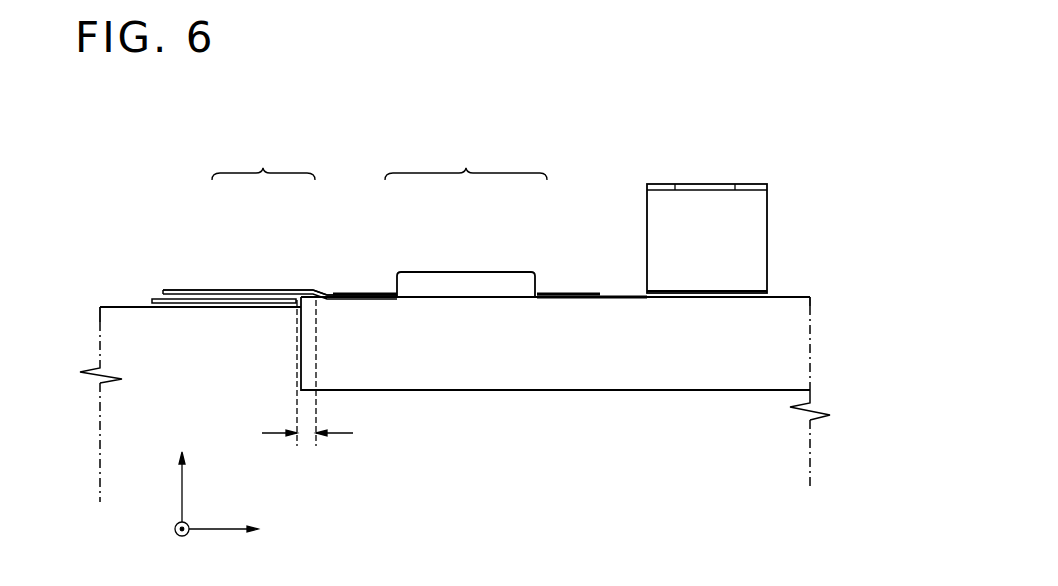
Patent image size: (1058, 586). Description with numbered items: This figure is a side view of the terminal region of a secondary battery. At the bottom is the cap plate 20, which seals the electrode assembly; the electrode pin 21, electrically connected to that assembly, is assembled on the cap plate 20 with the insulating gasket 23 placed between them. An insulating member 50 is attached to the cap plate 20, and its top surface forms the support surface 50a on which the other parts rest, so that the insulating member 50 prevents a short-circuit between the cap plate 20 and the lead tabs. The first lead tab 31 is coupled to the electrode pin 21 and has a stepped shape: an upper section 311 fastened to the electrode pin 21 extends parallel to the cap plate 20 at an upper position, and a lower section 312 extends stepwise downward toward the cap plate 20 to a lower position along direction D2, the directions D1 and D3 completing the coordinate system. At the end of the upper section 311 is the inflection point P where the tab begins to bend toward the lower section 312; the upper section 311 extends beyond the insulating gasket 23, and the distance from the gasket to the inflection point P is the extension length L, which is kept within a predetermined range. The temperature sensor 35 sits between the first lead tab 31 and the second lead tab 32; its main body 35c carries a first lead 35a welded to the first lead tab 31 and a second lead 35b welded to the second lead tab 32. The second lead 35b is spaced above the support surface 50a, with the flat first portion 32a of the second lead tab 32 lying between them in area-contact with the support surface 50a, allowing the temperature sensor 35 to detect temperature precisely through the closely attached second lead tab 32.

The cap plate 20 is at (118, 337).
The electrode pin 21 is at (184, 290).
The insulating gasket 23 is at (152, 299).
The first lead tab 31 is at (263, 163).
The upper section 311 is at (226, 290).
The lower section 312 is at (336, 294).
The inflection point P is at (320, 292).
The second lead tab 32 is at (688, 184).
The first portion 32a is at (633, 294).
The temperature sensor 35 is at (466, 163).
The first lead 35a is at (369, 292).
The second lead 35b is at (556, 293).
The main body 35c is at (466, 271).
The insulating member 50 is at (682, 365).
The support surface 50a is at (782, 294).
The extension length L is at (307, 382).
The direction D1 is at (239, 531).
The direction D2 is at (180, 476).
The direction D3 is at (166, 531).